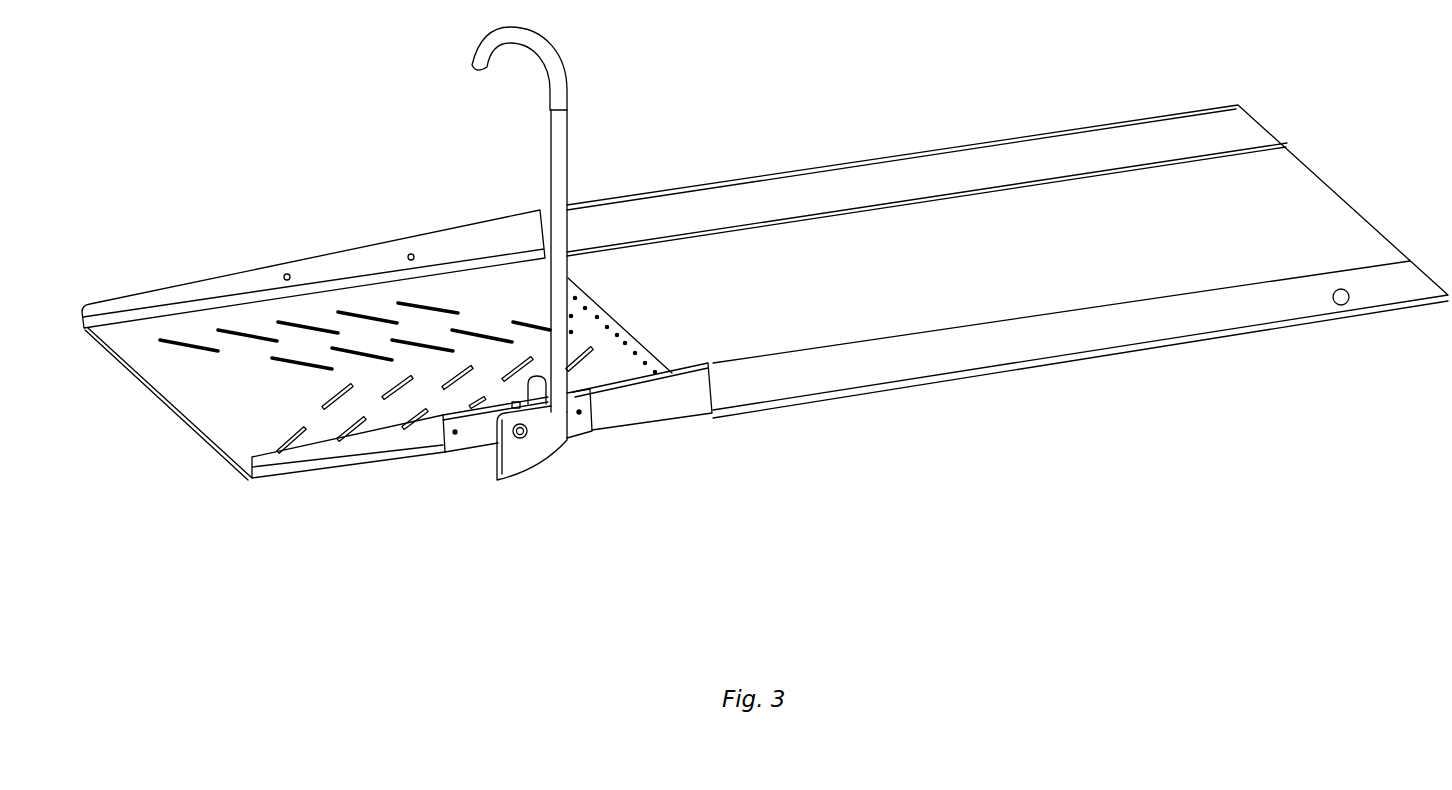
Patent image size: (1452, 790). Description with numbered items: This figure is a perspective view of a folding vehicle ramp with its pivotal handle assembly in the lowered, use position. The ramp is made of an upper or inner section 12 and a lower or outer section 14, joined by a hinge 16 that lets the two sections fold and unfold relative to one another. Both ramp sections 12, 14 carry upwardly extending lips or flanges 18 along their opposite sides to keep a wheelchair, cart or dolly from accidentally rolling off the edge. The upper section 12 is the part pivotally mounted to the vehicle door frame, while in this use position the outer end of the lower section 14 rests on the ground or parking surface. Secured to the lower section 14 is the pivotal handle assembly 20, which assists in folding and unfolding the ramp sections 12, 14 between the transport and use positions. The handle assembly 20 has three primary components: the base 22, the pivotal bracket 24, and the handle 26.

The upper or inner section 12 is at (1297, 200).
The lower or outer section 14 is at (177, 332).
The hinge 16 is at (613, 318).
The upwardly extending lips or flanges 18 is at (317, 272).
The pivotal handle assembly 20 is at (600, 91).
The base 22 is at (467, 446).
The pivotal bracket 24 is at (545, 450).
The handle 26 is at (566, 148).